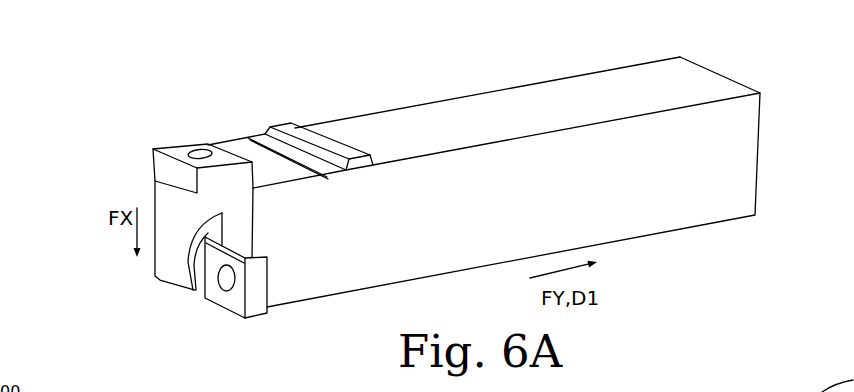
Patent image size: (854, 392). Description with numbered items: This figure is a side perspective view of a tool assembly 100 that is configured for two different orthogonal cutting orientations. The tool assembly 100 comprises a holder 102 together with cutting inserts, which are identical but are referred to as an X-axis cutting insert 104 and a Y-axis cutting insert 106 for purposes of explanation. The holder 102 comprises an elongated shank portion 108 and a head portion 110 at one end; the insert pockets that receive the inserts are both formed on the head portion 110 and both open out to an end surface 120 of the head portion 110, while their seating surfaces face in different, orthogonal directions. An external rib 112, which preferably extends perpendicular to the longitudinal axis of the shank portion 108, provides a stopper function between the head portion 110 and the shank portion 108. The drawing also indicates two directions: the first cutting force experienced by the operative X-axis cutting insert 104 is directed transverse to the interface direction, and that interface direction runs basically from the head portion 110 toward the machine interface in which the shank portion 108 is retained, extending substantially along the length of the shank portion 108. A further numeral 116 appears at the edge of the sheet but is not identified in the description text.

The tool assembly 100 is at (150, 57).
The holder 102 is at (536, 95).
The X-axis cutting insert 104 is at (165, 170).
The Y-axis cutting insert 106 is at (238, 298).
The shank portion 108 is at (455, 91).
The head portion 110 is at (233, 123).
The external rib 112 is at (312, 122).
The element of adjacent figure 116 is at (767, 391).
The end surface 120 is at (173, 265).